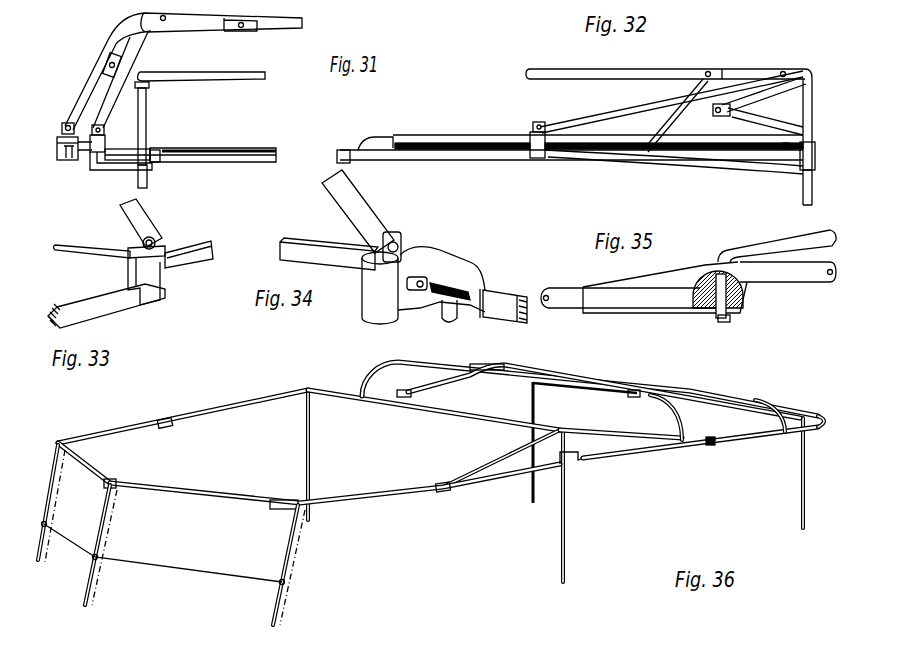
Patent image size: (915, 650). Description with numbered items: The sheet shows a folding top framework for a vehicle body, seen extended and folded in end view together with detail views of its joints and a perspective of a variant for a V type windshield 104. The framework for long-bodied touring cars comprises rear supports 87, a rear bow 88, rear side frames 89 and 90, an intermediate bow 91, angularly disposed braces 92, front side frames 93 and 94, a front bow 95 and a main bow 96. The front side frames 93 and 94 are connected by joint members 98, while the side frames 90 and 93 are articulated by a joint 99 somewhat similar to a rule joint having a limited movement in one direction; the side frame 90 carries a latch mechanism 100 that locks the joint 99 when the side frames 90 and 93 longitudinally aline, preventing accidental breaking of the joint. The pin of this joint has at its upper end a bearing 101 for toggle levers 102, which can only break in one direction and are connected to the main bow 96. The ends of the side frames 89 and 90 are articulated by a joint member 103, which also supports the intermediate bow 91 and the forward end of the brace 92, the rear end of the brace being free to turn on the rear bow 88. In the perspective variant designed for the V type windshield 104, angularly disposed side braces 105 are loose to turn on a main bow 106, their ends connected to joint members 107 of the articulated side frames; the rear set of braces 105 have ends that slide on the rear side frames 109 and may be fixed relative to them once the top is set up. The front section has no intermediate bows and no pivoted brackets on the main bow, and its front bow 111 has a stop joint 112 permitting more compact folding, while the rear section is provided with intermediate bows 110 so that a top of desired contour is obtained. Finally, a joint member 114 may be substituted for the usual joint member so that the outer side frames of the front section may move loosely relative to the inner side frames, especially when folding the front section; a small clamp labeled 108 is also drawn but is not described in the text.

In FIG. 31, the rear support 87 is at (148, 180).
In FIG. 32, the rear support 87 is at (803, 198).
In FIG. 31, the rear bow 88 is at (223, 75).
In FIG. 32, the rear bow 88 is at (817, 78).
In FIG. 31, the rear side frame 89 is at (98, 170).
In FIG. 32, the rear side frame 89 is at (693, 163).
In FIG. 33, the rear side frame 89 is at (88, 296).
In FIG. 31, the rear side frame 90 is at (85, 140).
In FIG. 32, the rear side frame 90 is at (718, 140).
In FIG. 33, the rear side frame 90 is at (201, 244).
In FIG. 34, the rear side frame 90 is at (508, 295).
In FIG. 31, the intermediate bow 91 is at (275, 26).
In FIG. 32, the intermediate bow 91 is at (650, 69).
In FIG. 33, the intermediate bow 91 is at (155, 222).
In FIG. 31, the angularly disposed brace 92 is at (148, 88).
In FIG. 32, the angularly disposed brace 92 is at (620, 115).
In FIG. 33, the angularly disposed brace 92 is at (60, 243).
In FIG. 32, the front side frame 93 is at (462, 135).
In FIG. 34, the front side frame 93 is at (310, 243).
In FIG. 31, the front side frame 94 is at (127, 153).
In FIG. 32, the front side frame 94 is at (455, 152).
In FIG. 31, the front bow 95 is at (268, 148).
In FIG. 32, the front bow 95 is at (343, 148).
In FIG. 31, the main bow 96 is at (194, 18).
In FIG. 32, the main bow 96 is at (748, 60).
In FIG. 32, the joint member 98 is at (368, 145).
In FIG. 31, the joint 99 is at (58, 157).
In FIG. 32, the joint 99 is at (817, 140).
In FIG. 34, the joint 99 is at (373, 296).
In FIG. 31, the latch mechanism 100 is at (70, 158).
In FIG. 32, the latch mechanism 100 is at (785, 150).
In FIG. 34, the latch mechanism 100 is at (473, 307).
In FIG. 31, the bearing 101 is at (65, 127).
In FIG. 34, the bearing 101 is at (403, 236).
In FIG. 31, the toggle lever 102 is at (110, 62).
In FIG. 32, the toggle lever 102 is at (763, 95).
In FIG. 34, the toggle lever 102 is at (368, 205).
In FIG. 31, the joint member 103 is at (110, 143).
In FIG. 32, the joint member 103 is at (540, 146).
In FIG. 33, the joint member 103 is at (157, 287).
In FIG. 36, the V type windshield 104 is at (276, 562).
In FIG. 36, the angularly disposed side brace 105 is at (250, 400).
In FIG. 36, the main bow 106 is at (407, 400).
In FIG. 36, the joint member 107 is at (162, 422).
In FIG. 36, the clamp 108 is at (717, 443).
In FIG. 36, the rear side frame 109 is at (322, 405).
In FIG. 36, the intermediate bow 110 is at (567, 382).
In FIG. 36, the front bow 111 is at (88, 463).
In FIG. 36, the stop joint 112 is at (112, 473).
In FIG. 35, the joint member 114 is at (748, 297).